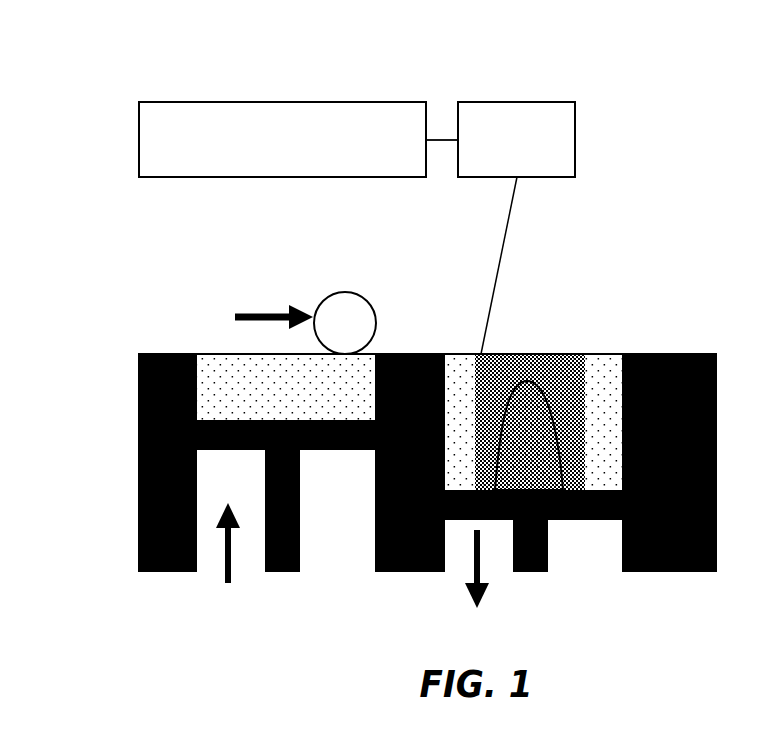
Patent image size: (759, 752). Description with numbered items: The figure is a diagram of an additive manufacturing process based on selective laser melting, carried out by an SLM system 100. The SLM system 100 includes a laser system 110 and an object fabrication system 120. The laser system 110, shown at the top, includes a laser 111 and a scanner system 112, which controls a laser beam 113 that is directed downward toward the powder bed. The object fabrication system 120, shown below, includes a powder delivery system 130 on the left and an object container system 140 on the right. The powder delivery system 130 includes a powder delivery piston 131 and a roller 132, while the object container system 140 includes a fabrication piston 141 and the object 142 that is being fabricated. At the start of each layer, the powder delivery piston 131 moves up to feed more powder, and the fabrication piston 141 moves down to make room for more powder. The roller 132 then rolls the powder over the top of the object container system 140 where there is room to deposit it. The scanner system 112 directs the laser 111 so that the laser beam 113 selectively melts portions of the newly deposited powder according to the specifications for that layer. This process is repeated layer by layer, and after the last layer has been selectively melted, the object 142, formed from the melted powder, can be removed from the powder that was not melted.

The SLM system 100 is at (682, 64).
The laser system 110 is at (317, 128).
The laser 111 is at (282, 129).
The scanner system 112 is at (516, 128).
The laser beam 113 is at (505, 237).
The object fabrication system 120 is at (132, 450).
The powder delivery system 130 is at (228, 357).
The powder delivery piston 131 is at (356, 460).
The roller 132 is at (342, 292).
The object container system 140 is at (522, 396).
The fabrication piston 141 is at (598, 532).
The object 142 is at (557, 358).